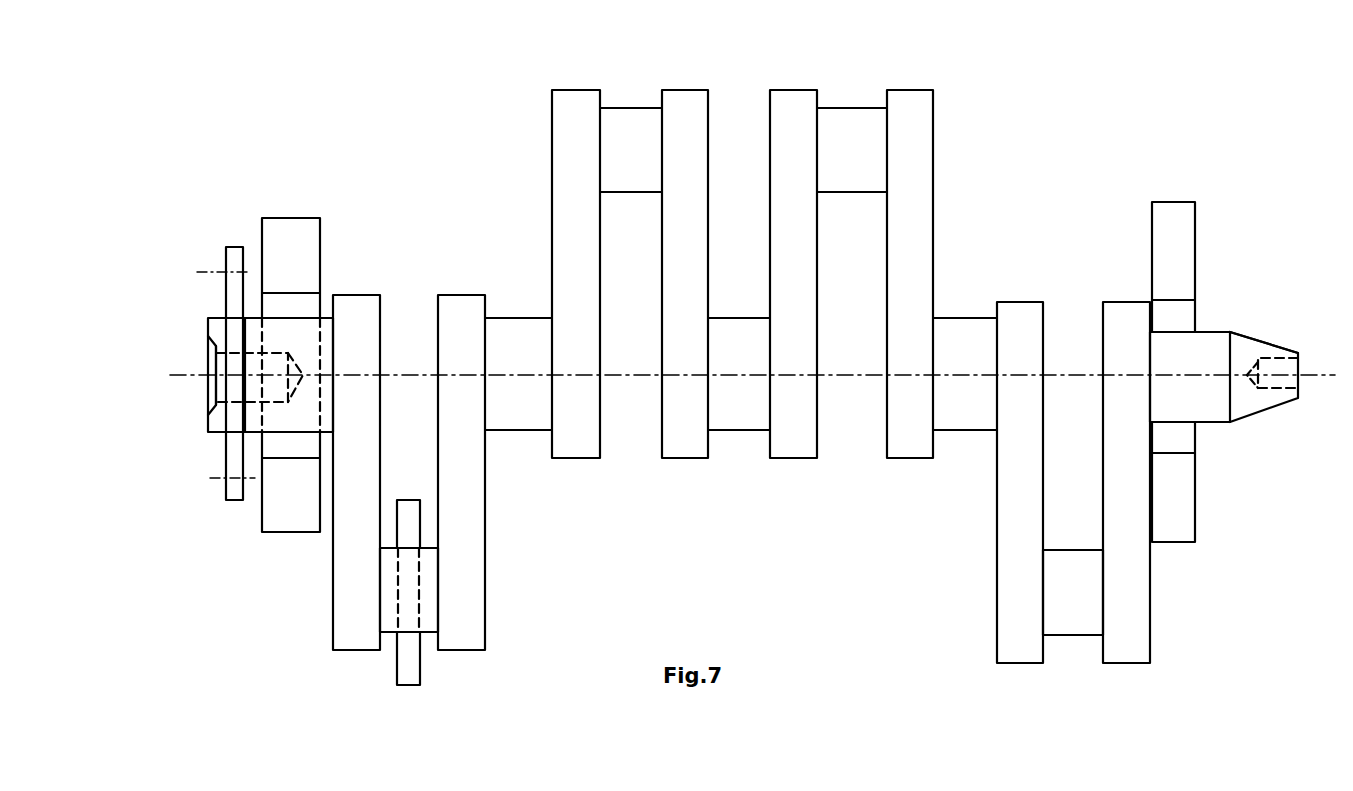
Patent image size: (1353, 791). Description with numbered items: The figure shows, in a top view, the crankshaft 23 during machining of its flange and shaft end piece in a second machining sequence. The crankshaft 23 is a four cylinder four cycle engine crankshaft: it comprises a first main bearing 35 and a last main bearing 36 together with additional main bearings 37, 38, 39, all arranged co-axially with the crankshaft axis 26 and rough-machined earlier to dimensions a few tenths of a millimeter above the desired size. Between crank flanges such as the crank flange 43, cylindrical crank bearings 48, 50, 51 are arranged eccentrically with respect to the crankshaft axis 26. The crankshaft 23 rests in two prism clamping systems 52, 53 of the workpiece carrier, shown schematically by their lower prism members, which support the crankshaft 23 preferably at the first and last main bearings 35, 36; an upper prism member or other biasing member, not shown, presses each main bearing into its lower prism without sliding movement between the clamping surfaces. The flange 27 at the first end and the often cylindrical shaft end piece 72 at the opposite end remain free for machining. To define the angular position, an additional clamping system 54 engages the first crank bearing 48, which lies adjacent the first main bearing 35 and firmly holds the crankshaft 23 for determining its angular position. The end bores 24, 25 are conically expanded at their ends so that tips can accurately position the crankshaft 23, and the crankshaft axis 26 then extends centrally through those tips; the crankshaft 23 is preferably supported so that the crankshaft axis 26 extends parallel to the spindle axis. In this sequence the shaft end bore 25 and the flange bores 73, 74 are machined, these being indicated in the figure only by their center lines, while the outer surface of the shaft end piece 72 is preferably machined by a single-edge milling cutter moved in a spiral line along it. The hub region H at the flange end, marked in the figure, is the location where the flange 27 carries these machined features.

The crankshaft 23 is at (751, 381).
The end bore 24 is at (228, 402).
The shaft end bore 25 is at (1280, 355).
The crankshaft axis 26 is at (1313, 378).
The flange 27 is at (237, 213).
The first main bearing 35 is at (298, 340).
The last main bearing 36 is at (1203, 350).
The main bearing 37 is at (497, 317).
The main bearing 38 is at (723, 318).
The main bearing 39 is at (958, 317).
The crank flange 43 is at (625, 118).
The first crank bearing 48 is at (390, 615).
The crank bearing 50 is at (850, 108).
The crank bearing 51 is at (1068, 630).
The prism clamping system 52 is at (318, 203).
The prism clamping system 53 is at (1210, 227).
The clamping system 54 is at (420, 665).
The shaft end piece 72 is at (1270, 340).
The flange bore 73 is at (213, 480).
The flange bore 74 is at (212, 272).
The hub H is at (213, 318).